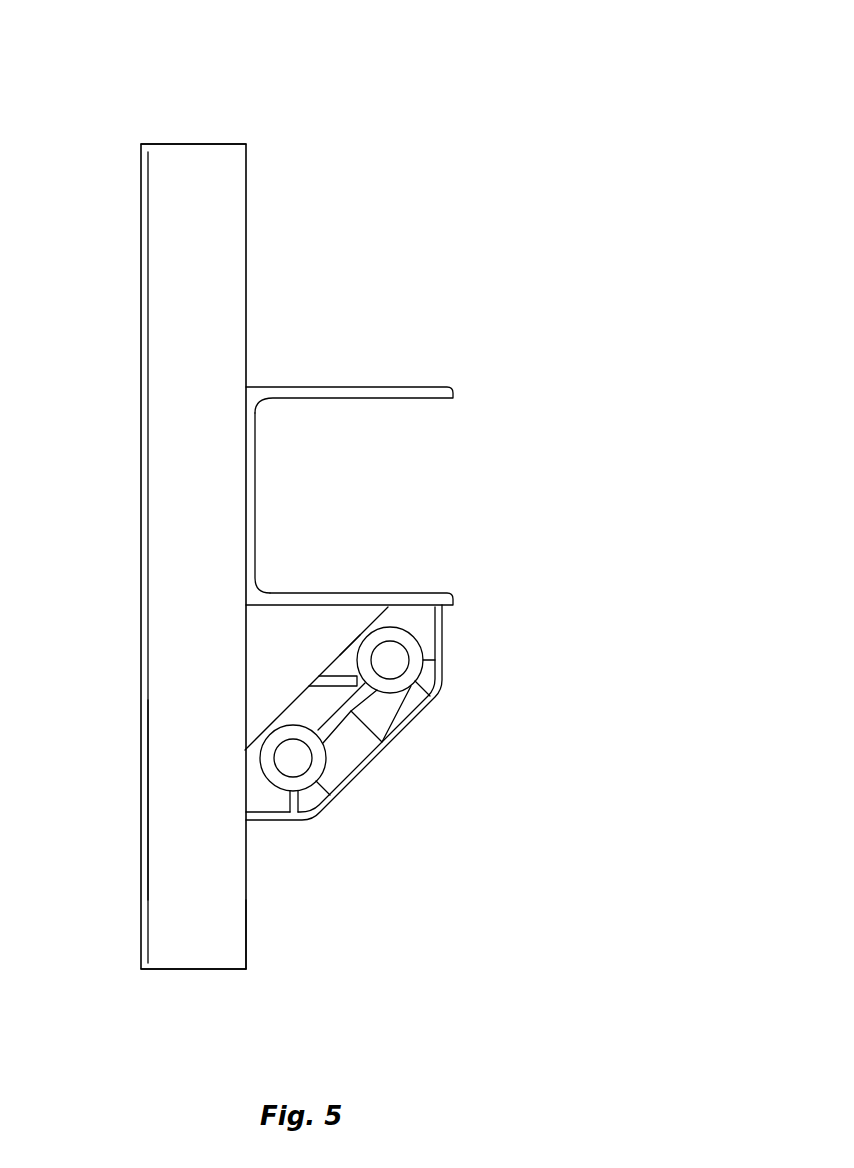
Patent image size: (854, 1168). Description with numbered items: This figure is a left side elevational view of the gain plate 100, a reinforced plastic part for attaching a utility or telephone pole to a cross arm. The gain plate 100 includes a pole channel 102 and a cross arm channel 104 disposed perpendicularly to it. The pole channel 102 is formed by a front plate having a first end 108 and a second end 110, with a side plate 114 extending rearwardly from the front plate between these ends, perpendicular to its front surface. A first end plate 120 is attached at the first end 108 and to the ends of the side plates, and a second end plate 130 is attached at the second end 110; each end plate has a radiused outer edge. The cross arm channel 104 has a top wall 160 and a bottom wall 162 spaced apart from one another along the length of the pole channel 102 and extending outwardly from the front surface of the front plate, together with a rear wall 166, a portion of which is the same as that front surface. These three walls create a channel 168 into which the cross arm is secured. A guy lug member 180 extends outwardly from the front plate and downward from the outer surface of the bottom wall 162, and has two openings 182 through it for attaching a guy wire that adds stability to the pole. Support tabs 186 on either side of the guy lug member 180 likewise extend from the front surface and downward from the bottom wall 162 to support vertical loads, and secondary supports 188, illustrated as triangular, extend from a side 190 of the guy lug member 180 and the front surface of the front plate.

The gain plate 100 is at (440, 122).
The pole channel 102 is at (141, 744).
The cross arm channel 104 is at (447, 465).
The first end 108 is at (252, 98).
The second end 110 is at (248, 970).
The side plate 114 is at (172, 847).
The first end plate 120 is at (185, 143).
The second end plate 130 is at (190, 970).
The top wall 160 is at (431, 386).
The bottom wall 162 is at (448, 598).
The rear wall 166 is at (256, 453).
The channel 168 is at (348, 512).
The guy lug member 180 is at (421, 716).
The openings 182 is at (392, 659).
The support tabs 186 is at (281, 652).
The secondary supports 188 is at (335, 681).
The side 190 is at (346, 658).